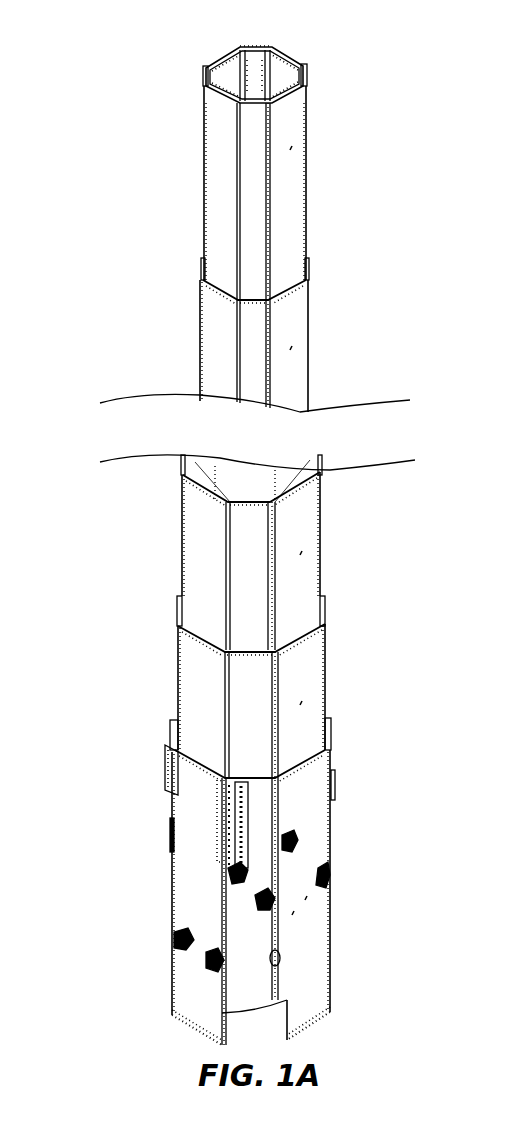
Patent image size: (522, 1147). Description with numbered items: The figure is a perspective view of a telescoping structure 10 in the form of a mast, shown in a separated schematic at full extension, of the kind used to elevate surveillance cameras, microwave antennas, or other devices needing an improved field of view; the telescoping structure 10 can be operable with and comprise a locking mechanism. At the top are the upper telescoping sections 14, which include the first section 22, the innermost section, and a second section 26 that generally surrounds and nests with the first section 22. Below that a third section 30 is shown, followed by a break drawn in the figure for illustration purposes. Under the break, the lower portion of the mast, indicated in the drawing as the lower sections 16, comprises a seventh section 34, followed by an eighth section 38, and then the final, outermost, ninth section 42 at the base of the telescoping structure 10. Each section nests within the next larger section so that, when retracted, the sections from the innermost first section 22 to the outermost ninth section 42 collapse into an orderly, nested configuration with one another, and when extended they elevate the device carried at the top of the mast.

The telescoping structure 10 is at (128, 55).
The upper telescoping sections 14 is at (372, 145).
The lower mast section 16 is at (378, 530).
The first section 22 is at (300, 64).
The second section 26 is at (224, 180).
The third section 30 is at (217, 389).
The seventh section 34 is at (205, 565).
The eighth section 38 is at (201, 696).
The ninth section 42 is at (192, 867).